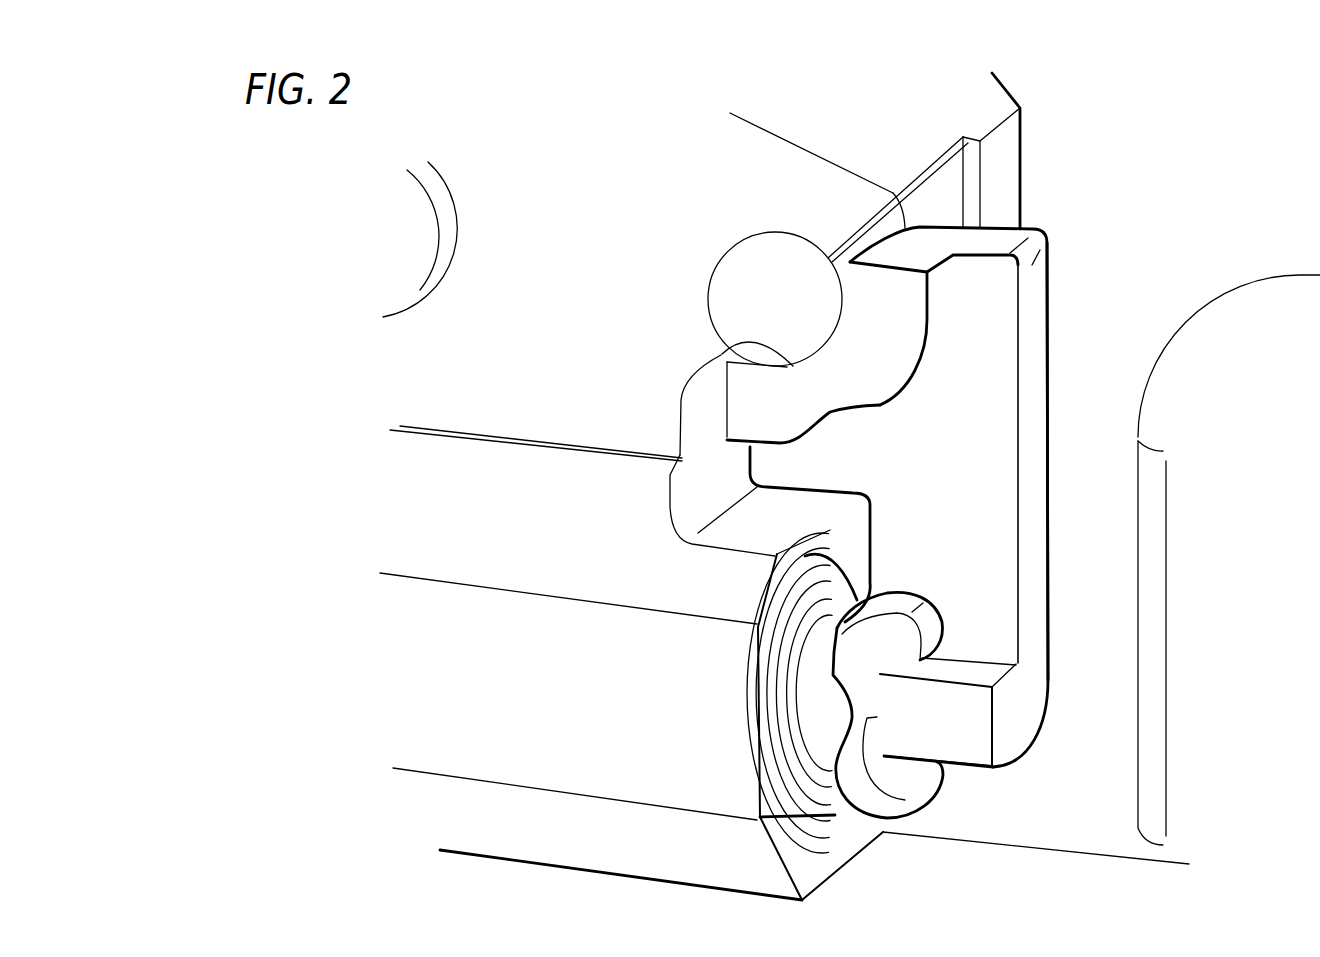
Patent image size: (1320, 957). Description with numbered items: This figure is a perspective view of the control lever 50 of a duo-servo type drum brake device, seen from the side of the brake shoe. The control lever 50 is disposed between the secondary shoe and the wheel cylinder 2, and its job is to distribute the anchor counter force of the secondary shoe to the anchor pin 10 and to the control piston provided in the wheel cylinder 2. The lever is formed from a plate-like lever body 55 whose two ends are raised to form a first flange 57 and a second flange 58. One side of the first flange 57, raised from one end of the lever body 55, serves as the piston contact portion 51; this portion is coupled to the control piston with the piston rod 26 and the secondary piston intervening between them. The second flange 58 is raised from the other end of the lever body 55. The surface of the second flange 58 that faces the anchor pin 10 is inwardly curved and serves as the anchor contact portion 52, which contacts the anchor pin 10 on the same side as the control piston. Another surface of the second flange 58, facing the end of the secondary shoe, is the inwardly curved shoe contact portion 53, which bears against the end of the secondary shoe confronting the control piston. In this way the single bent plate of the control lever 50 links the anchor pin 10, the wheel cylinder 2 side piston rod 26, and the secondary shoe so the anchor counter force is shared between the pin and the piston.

The wheel cylinder 2 is at (762, 155).
The anchor pin 10 is at (747, 283).
The piston rod 26 is at (860, 638).
The control lever 50 is at (876, 461).
The piston contact portion 51 is at (870, 718).
The anchor contact portion 52 is at (723, 351).
The shoe contact portion 53 is at (823, 417).
The lever body 55 is at (990, 510).
The first flange 57 is at (955, 700).
The second flange 58 is at (893, 330).